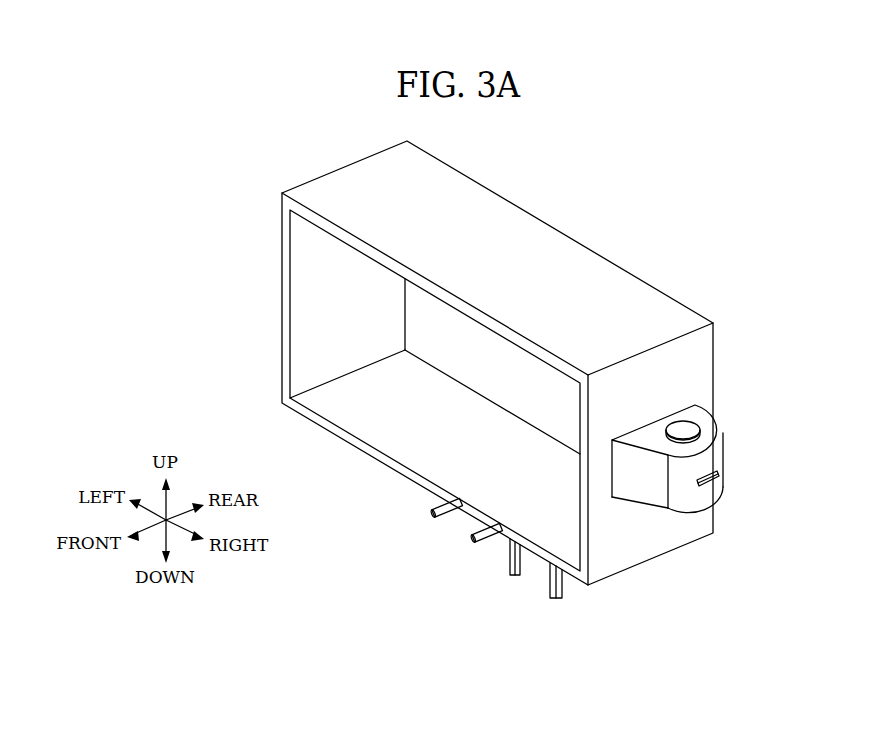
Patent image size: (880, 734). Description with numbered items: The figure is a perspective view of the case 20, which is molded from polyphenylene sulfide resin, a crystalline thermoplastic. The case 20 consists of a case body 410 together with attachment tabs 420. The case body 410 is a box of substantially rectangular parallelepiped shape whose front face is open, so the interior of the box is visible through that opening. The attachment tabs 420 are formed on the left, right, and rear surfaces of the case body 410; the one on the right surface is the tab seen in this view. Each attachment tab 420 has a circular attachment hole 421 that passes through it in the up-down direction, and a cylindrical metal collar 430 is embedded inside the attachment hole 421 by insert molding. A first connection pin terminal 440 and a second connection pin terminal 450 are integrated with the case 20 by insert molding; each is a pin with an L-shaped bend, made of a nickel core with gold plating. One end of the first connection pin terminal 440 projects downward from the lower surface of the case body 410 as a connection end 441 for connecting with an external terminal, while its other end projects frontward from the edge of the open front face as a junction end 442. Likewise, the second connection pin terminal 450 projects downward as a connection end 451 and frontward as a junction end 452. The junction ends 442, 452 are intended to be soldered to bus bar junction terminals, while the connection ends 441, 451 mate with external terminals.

The case 20 is at (460, 363).
The case body 410 is at (552, 240).
The attachment tab 420 is at (701, 416).
The attachment hole 421 is at (722, 464).
The collar 430 is at (688, 421).
The first connection pin terminal 440 is at (535, 548).
The connection end 441 is at (563, 597).
The junction end 442 is at (483, 522).
The second connection pin terminal 450 is at (475, 538).
The connection end 451 is at (512, 575).
The junction end 452 is at (438, 498).